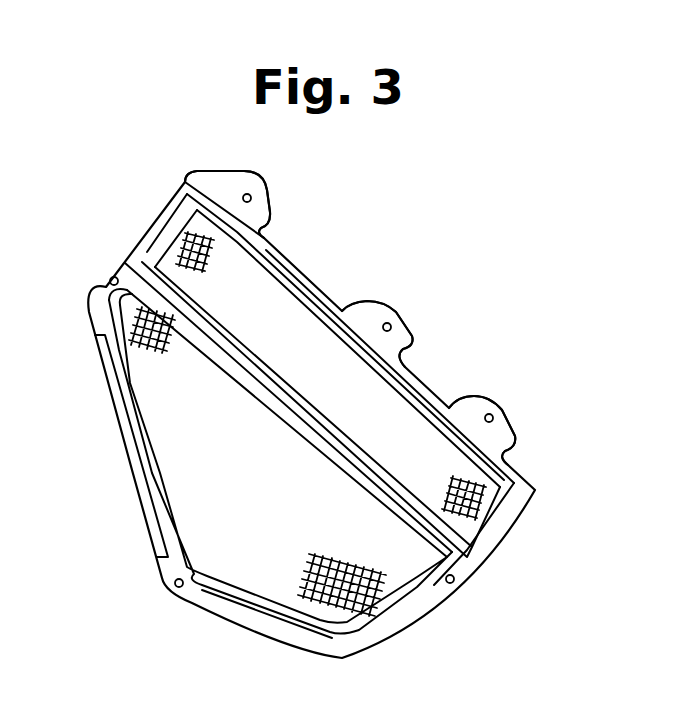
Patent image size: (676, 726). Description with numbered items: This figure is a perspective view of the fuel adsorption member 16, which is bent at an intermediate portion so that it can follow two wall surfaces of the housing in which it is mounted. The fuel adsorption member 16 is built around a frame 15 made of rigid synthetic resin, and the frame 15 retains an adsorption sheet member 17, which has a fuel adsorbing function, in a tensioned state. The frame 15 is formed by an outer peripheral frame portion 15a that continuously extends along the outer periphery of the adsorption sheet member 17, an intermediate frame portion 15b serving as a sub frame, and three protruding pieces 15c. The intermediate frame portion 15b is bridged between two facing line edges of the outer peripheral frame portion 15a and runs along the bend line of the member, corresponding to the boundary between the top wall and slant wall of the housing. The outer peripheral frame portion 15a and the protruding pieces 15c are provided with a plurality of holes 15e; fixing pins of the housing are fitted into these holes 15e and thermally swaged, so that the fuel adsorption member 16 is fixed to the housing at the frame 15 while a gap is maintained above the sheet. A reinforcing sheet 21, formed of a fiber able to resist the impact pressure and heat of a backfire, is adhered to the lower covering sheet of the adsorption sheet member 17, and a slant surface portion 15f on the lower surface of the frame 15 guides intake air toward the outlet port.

The frame 15 is at (405, 625).
The outer peripheral frame portion 15a is at (255, 623).
The intermediate frame portion 15b is at (337, 447).
The protruding pieces 15c is at (225, 172).
The holes 15e is at (108, 280).
The slant surface portion 15f is at (122, 441).
The fuel adsorption member 16 is at (290, 262).
The adsorption sheet member 17 is at (398, 583).
The reinforcing sheet 21 is at (470, 468).